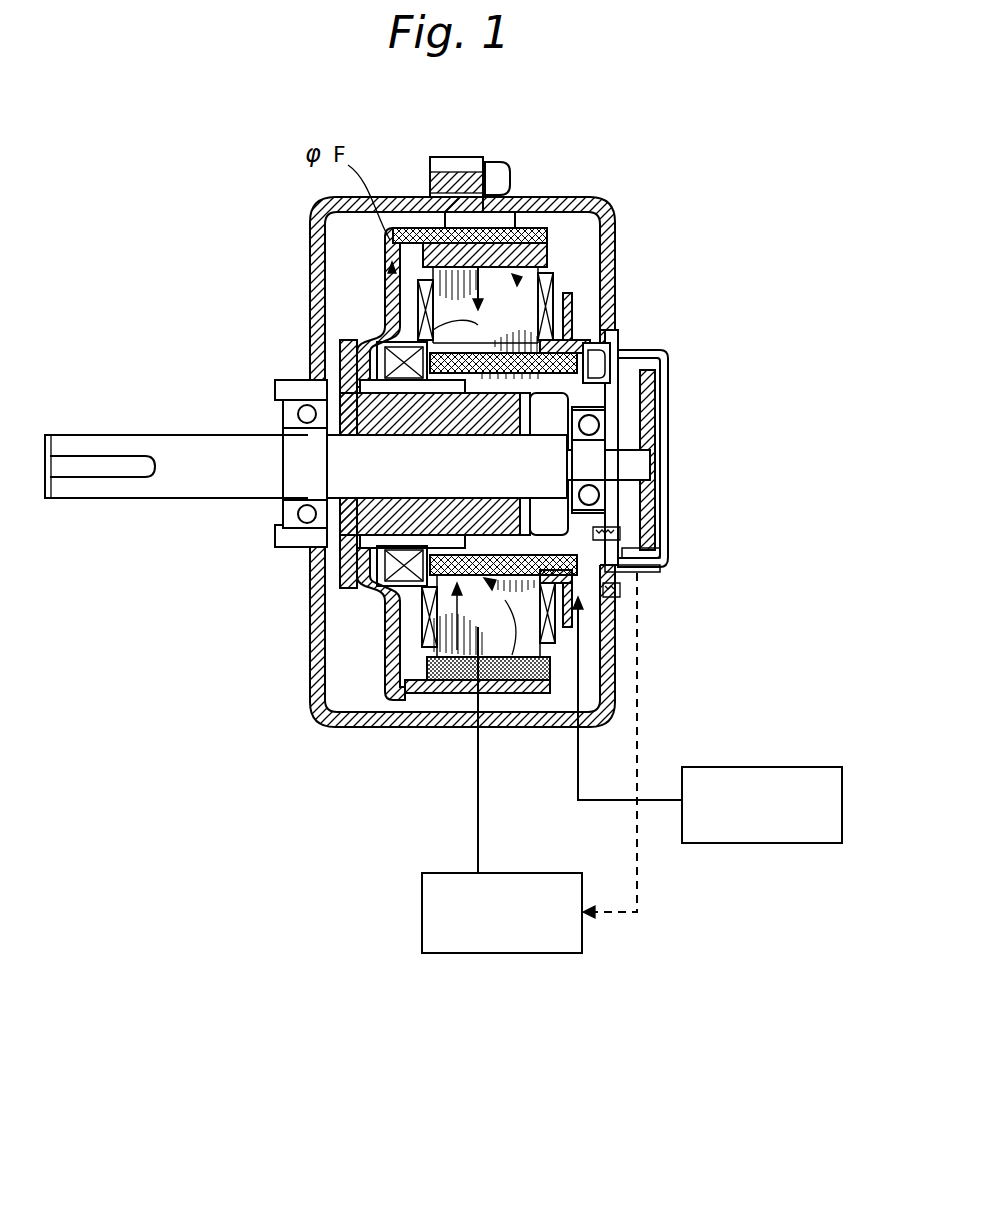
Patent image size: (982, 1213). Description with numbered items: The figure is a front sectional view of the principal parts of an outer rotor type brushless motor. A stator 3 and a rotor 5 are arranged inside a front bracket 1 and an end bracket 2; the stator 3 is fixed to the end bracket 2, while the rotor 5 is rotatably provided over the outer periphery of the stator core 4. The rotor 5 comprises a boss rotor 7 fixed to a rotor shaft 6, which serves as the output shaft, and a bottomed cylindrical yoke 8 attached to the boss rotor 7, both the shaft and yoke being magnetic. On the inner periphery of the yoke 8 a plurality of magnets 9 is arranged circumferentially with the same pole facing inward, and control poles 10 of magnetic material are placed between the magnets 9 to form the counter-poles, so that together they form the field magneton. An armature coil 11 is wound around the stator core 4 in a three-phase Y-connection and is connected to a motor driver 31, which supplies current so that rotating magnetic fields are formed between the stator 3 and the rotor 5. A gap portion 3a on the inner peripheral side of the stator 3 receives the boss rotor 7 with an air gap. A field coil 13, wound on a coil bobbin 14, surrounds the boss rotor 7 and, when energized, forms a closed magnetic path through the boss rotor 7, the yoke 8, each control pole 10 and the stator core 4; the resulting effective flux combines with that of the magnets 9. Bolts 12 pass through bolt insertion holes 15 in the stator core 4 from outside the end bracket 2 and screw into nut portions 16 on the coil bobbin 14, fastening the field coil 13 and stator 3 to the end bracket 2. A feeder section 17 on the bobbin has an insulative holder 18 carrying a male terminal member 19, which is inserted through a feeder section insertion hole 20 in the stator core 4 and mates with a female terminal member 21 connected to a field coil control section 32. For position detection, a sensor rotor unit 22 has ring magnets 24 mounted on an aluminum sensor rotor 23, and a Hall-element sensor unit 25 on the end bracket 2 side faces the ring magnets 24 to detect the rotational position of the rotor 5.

The front bracket 1 is at (315, 214).
The end bracket 2 is at (618, 208).
The stator 3 is at (547, 247).
The gap portion 3a is at (593, 403).
The stator core 4 is at (427, 240).
The rotor 5 is at (378, 660).
The rotor shaft 6 is at (183, 498).
The boss rotor 7 is at (360, 513).
The yoke 8 is at (383, 265).
The magnet 9 is at (528, 680).
The control pole 10 is at (513, 240).
The armature coil 11 is at (565, 290).
The bolt 12 is at (618, 345).
The field coil 13 is at (370, 360).
The coil bobbin 14 is at (330, 375).
The bolt insertion hole 15 is at (497, 325).
The nut portion 16 is at (390, 320).
The feeder section 17 is at (573, 627).
The holder 18 is at (443, 680).
The male terminal member 19 is at (493, 588).
The feeder section insertion hole 20 is at (413, 693).
The female terminal member 21 is at (550, 645).
The sensor rotor unit 22 is at (680, 548).
The sensor rotor 23 is at (655, 432).
The ring magnet 24 is at (670, 557).
The sensor unit 25 is at (653, 572).
The motor driver 31 is at (555, 953).
The field coil control section 32 is at (815, 843).